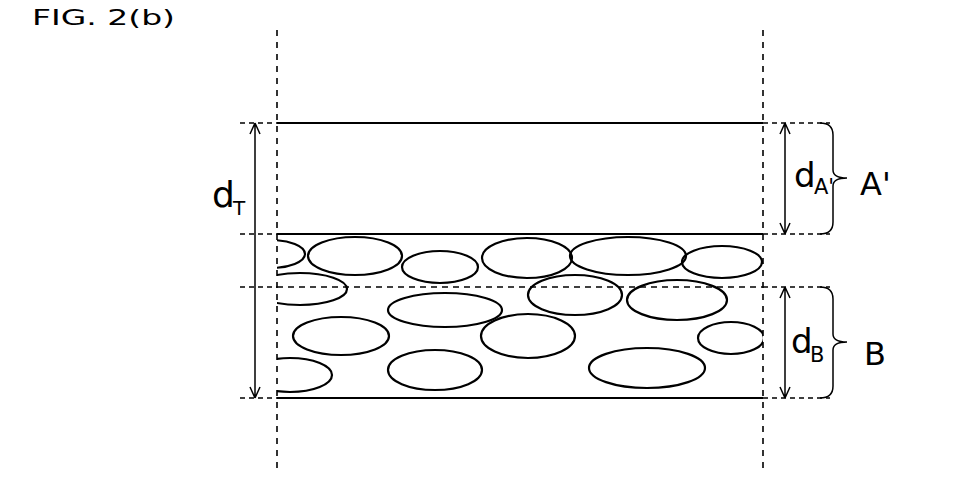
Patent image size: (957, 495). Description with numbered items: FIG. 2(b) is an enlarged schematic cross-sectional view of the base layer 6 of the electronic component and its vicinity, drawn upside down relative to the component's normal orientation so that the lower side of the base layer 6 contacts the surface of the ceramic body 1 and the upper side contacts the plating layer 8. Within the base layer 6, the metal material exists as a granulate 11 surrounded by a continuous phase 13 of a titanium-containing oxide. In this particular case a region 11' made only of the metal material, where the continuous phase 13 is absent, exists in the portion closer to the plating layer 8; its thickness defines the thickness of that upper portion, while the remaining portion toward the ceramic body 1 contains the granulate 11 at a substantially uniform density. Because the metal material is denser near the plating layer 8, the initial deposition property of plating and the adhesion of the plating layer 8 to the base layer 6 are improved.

The plating layer 8 is at (530, 98).
The ceramic body 1 is at (529, 463).
The base layer 6 is at (157, 235).
The region made only of the metal material 11' is at (461, 261).
The continuous phase of the titanium-containing oxide 13 is at (287, 327).
The granulate of the metal material 11 is at (462, 342).